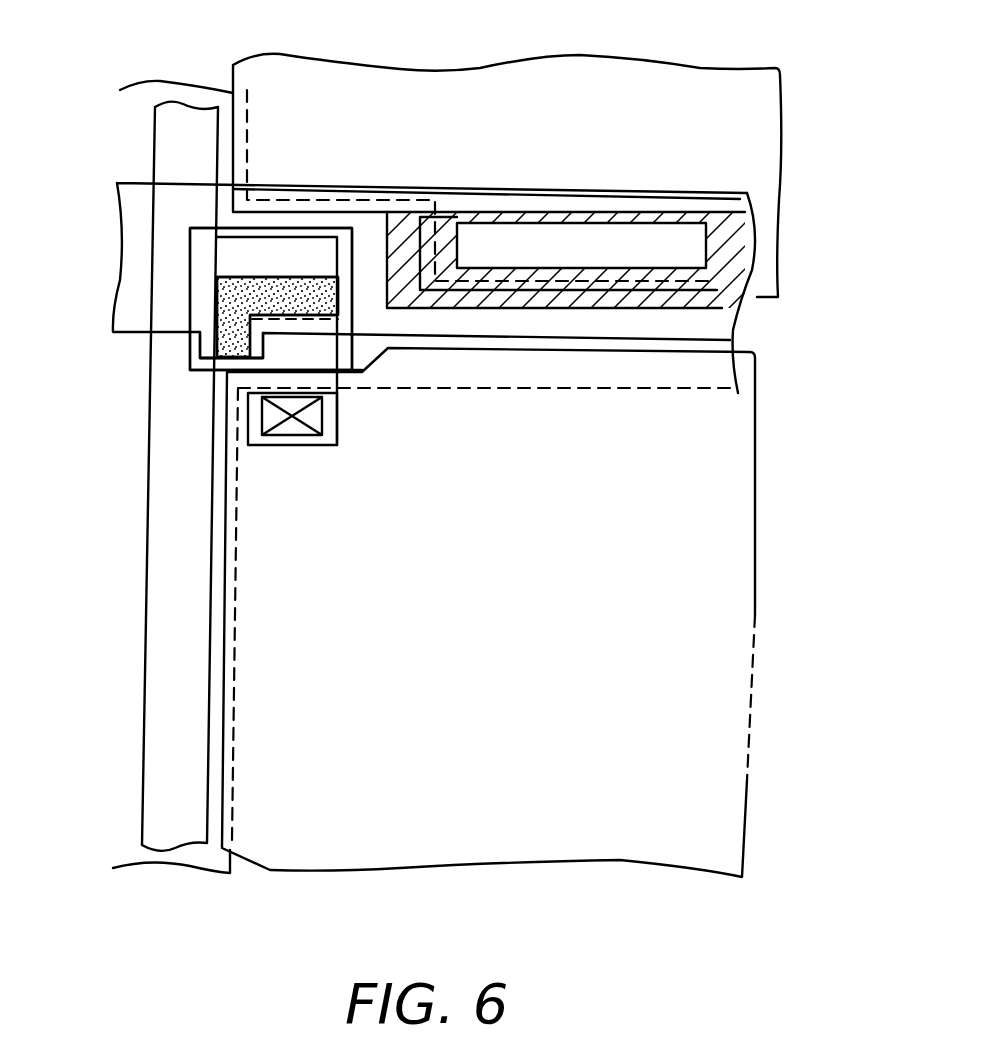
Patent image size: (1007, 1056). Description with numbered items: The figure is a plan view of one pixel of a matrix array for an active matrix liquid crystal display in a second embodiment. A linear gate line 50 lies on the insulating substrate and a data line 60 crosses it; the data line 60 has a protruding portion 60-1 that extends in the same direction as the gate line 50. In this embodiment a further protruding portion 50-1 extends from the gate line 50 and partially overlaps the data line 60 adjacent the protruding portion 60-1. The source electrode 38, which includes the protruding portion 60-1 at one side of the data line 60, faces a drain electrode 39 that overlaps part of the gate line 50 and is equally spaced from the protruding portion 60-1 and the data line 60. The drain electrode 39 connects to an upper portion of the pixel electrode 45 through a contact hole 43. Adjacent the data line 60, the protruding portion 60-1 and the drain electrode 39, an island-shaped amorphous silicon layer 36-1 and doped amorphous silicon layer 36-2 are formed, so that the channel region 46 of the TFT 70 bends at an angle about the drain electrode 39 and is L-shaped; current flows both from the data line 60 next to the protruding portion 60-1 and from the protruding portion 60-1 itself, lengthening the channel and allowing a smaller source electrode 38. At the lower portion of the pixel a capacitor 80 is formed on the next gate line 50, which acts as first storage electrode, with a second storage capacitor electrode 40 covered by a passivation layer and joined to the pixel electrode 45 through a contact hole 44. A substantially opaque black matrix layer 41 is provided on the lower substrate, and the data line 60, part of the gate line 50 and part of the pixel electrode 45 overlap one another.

The amorphous silicon layer 36-1 is at (222, 347).
The doped amorphous silicon layer 36-2 is at (196, 359).
The source electrode 38 is at (217, 256).
The drain electrode 39 is at (328, 412).
The second storage capacitor electrode 40 is at (710, 240).
The black matrix layer 41 is at (178, 93).
The contact hole 43 is at (252, 425).
The contact hole 44 is at (703, 260).
The pixel electrode 45 is at (757, 93).
The channel region 46 is at (201, 358).
The gate line 50 is at (132, 207).
The protruding portion 50-1 is at (190, 342).
The data line 60 is at (183, 552).
The protruding portion 60-1 is at (260, 237).
The TFT 70 is at (182, 298).
The capacitor 80 is at (723, 209).